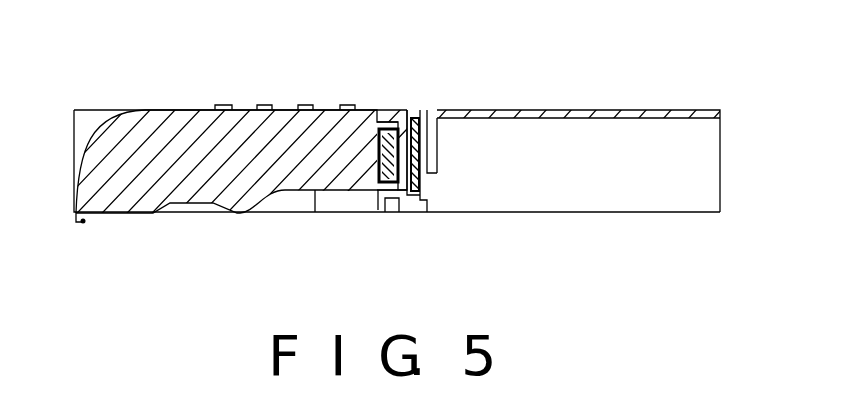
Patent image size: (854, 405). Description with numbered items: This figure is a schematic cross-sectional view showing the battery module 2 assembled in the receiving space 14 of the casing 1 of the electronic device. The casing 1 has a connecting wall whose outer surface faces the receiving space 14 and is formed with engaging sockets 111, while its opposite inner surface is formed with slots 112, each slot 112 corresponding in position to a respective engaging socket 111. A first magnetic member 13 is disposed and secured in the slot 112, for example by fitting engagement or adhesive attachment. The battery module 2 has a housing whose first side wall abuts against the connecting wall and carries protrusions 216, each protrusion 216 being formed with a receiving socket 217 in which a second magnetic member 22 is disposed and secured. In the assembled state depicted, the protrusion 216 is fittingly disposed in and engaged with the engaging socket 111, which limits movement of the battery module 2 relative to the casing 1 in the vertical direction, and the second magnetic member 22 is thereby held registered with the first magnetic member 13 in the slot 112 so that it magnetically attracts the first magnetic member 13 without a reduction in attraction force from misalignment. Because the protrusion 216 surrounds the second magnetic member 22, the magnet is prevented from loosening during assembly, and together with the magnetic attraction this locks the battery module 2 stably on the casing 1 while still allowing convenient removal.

The casing 1 is at (503, 107).
The battery module 2 is at (162, 107).
The first magnetic member 13 is at (430, 130).
The receiving space 14 is at (83, 112).
The second magnetic member 22 is at (397, 191).
The engaging socket 111 is at (403, 194).
The slot 112 is at (415, 119).
The protrusion 216 is at (393, 123).
The receiving socket 217 is at (379, 189).